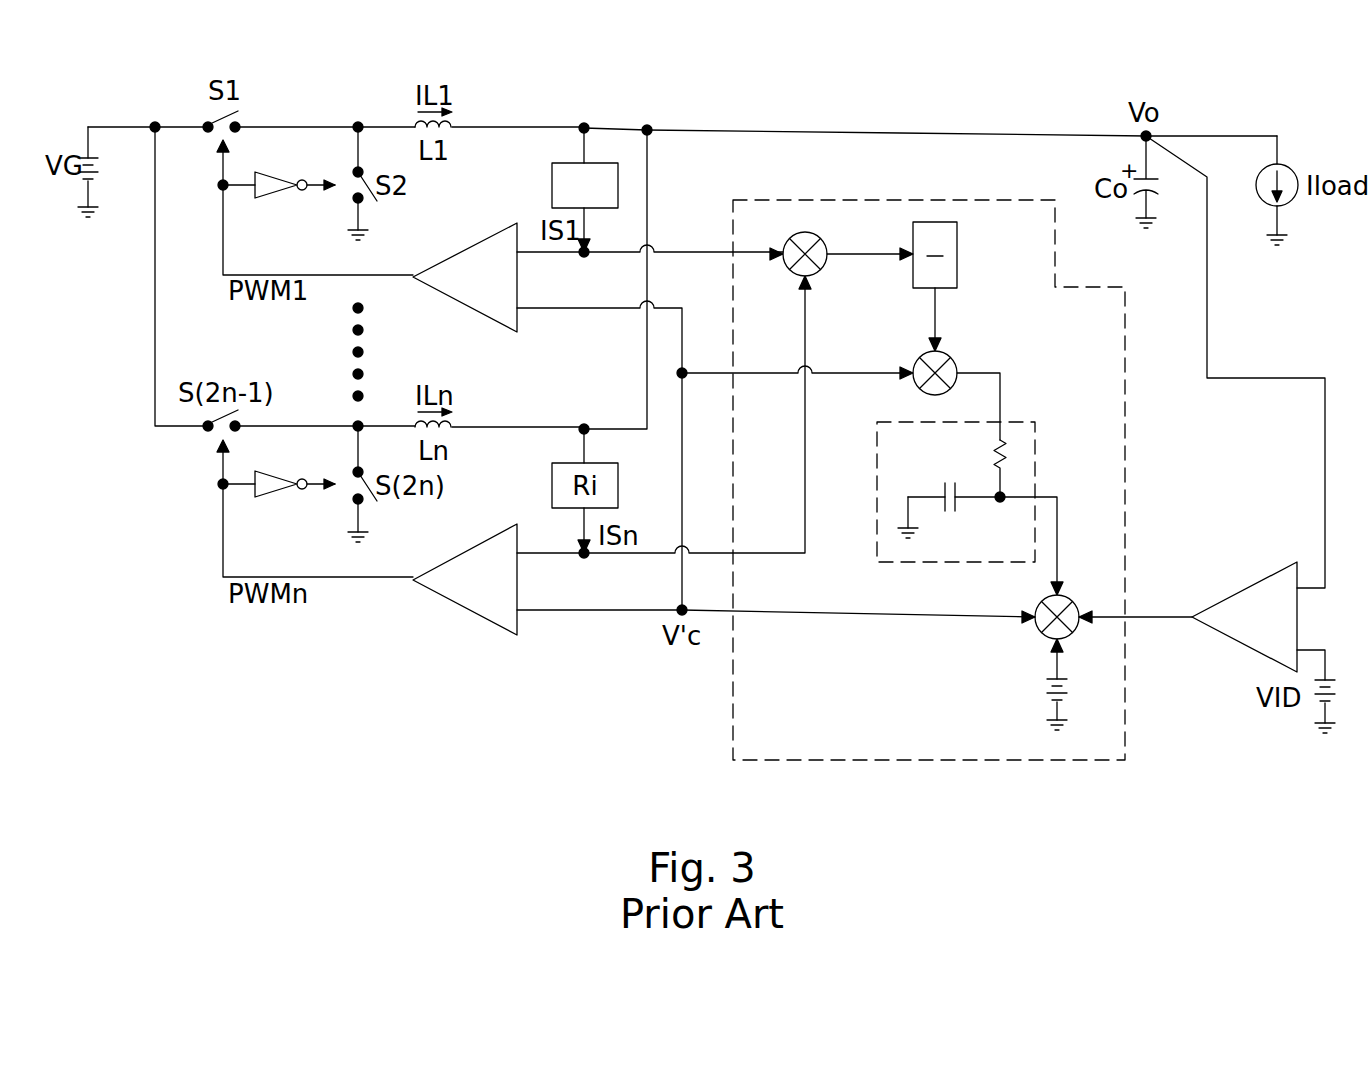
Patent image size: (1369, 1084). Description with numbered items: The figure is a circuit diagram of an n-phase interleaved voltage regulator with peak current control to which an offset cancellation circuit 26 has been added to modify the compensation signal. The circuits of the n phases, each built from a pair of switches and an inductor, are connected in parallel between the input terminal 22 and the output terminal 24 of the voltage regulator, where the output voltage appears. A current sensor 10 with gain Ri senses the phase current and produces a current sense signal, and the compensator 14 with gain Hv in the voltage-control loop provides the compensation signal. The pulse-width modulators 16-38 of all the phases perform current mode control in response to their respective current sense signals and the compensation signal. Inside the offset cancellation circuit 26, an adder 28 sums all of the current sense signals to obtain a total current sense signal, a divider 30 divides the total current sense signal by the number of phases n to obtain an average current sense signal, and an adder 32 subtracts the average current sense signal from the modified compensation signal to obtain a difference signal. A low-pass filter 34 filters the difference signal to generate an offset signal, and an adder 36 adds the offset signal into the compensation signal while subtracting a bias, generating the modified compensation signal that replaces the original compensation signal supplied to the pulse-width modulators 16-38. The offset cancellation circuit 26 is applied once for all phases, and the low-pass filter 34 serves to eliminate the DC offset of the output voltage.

The input terminal 22 is at (121, 126).
The output terminal 24 is at (700, 131).
The current sensor 10 is at (552, 184).
The pulse-width modulator 16 is at (468, 247).
The adder 28 is at (805, 232).
The divider 30 is at (957, 255).
The adder 32 is at (917, 357).
The low-pass filter 34 is at (1035, 456).
The offset cancellation circuit 26 is at (1125, 469).
The compensator 14 is at (1243, 590).
The adder 36 is at (1035, 632).
The pulse-width modulator 38 is at (464, 611).